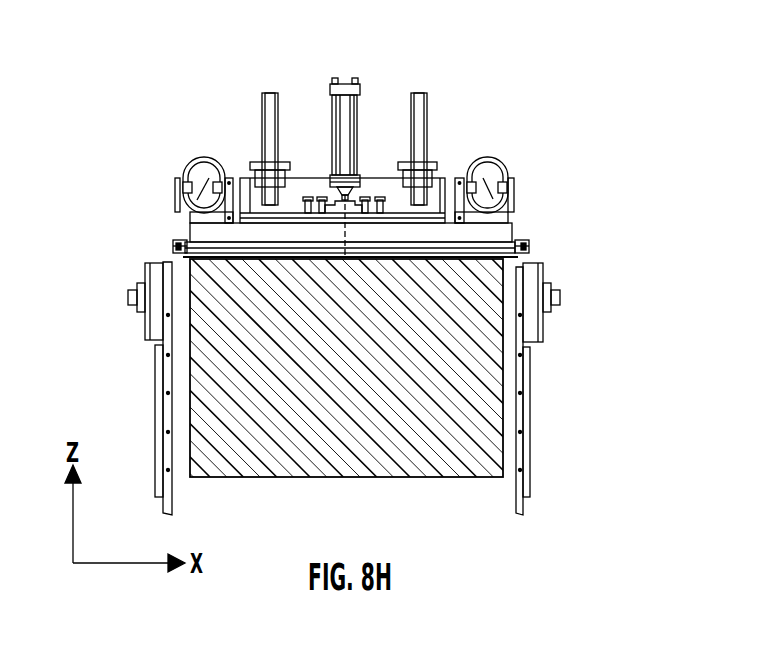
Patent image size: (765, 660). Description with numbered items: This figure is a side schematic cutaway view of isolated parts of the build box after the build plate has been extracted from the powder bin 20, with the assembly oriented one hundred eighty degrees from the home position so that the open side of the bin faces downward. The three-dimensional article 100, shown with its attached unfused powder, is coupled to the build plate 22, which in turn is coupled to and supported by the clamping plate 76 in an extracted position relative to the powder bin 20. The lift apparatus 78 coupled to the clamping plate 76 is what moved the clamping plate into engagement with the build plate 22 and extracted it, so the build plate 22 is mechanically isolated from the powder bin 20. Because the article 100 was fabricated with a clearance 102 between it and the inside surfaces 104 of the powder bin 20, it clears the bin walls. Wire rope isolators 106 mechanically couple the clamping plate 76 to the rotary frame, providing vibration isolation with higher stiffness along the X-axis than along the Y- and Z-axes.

The powder bin 20 is at (522, 460).
The build plate 22 is at (476, 256).
The clamping plate 76 is at (445, 237).
The lift apparatus 78 is at (373, 186).
The 3D article 100 is at (482, 403).
The clearance 102 is at (178, 362).
The inside surfaces 104 is at (177, 403).
The wire rope isolators 106 is at (199, 158).